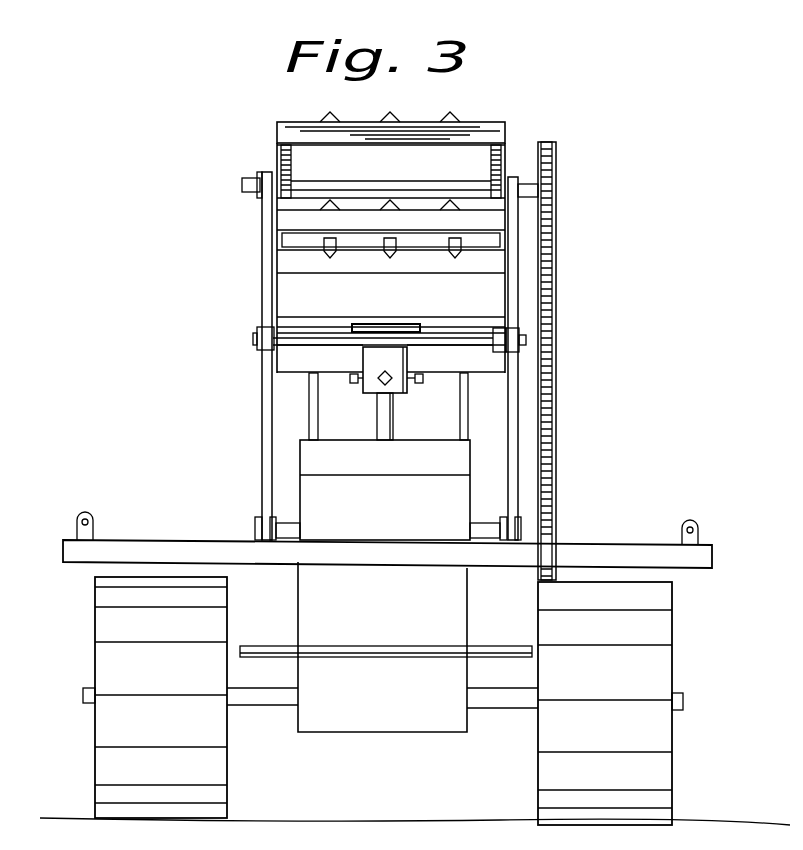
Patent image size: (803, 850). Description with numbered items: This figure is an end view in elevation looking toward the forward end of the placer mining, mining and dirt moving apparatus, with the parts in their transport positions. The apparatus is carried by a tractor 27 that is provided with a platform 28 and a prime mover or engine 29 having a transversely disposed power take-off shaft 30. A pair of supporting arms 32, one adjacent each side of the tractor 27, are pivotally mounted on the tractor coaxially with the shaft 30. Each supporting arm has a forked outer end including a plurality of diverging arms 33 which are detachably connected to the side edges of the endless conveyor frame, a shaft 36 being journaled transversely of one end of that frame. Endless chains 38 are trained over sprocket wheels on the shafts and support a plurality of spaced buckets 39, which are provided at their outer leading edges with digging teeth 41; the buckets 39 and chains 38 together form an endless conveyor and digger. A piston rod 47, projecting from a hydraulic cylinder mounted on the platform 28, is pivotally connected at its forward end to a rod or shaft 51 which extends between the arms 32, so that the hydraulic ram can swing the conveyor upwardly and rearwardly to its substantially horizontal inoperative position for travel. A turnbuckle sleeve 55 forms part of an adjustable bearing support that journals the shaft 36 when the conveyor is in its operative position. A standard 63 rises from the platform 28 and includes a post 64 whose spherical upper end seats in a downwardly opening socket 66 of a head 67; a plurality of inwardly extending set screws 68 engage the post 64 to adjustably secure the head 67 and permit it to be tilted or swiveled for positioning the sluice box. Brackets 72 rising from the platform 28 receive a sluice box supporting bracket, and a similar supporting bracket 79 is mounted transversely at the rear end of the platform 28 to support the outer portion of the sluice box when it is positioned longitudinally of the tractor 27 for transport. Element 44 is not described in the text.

The tractor 27 is at (585, 537).
The platform 28 is at (387, 555).
The engine 29 is at (385, 490).
The power take-off shaft 30 is at (487, 524).
The supporting arms 32 is at (262, 440).
The diverging arms 33 is at (265, 238).
The shaft 36 is at (242, 185).
The endless chains 38 is at (293, 162).
The buckets 39 is at (343, 250).
The digging teeth 41 is at (456, 122).
The rack 44 is at (557, 363).
The piston rod 47 is at (492, 347).
The shaft 51 is at (437, 340).
The turnbuckle sleeve 55 is at (480, 648).
The standard 63 is at (412, 425).
The post 64 is at (379, 414).
The socket 66 is at (385, 368).
The head 67 is at (365, 325).
The set screws 68 is at (413, 387).
The brackets 72 is at (87, 512).
The supporting bracket 79 is at (304, 392).